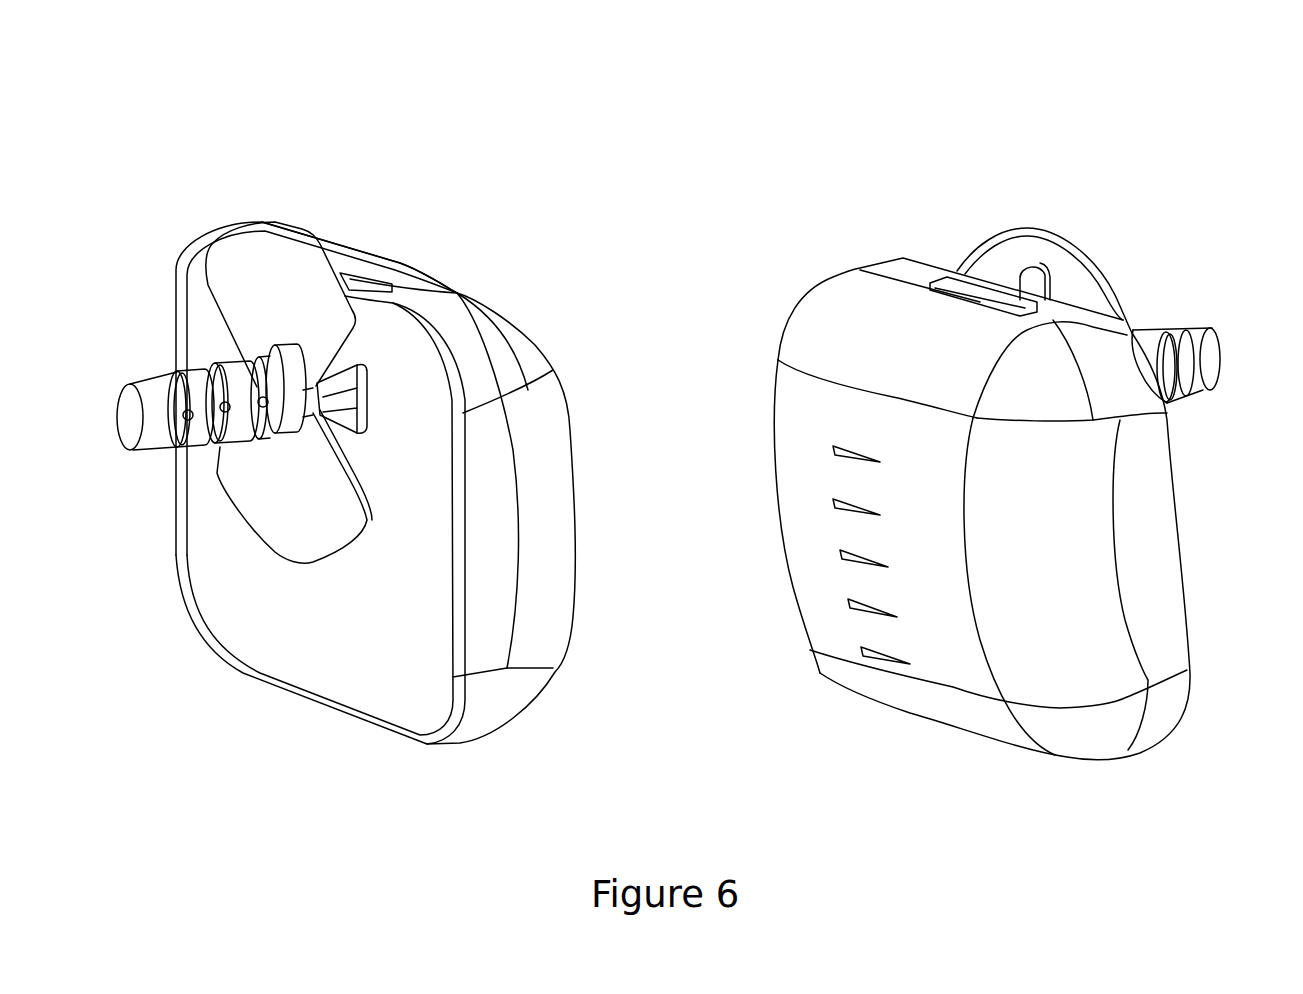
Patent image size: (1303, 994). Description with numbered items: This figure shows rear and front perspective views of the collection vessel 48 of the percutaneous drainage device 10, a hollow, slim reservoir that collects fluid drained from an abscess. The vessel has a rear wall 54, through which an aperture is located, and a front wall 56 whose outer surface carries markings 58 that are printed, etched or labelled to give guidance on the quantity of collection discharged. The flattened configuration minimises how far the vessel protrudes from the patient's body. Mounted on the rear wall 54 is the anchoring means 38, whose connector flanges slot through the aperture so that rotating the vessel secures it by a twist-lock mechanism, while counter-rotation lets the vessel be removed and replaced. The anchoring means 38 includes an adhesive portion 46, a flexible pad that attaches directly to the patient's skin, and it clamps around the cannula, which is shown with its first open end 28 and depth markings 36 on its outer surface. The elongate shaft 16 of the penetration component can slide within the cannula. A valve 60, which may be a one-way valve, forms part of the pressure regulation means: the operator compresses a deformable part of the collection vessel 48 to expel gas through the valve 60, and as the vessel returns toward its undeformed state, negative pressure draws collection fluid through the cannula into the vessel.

The percutaneous drainage device 10 is at (590, 172).
The elongate shaft 16 is at (1175, 330).
The first open end 28 is at (150, 402).
The markings 36 is at (188, 419).
The anchoring means 38 is at (350, 392).
The adhesive portion 46 is at (242, 263).
The collection vessel 48 is at (447, 285).
The rear wall 54 is at (360, 658).
The front wall 56 is at (558, 374).
The markings 58 is at (897, 560).
The valve 60 is at (353, 272).